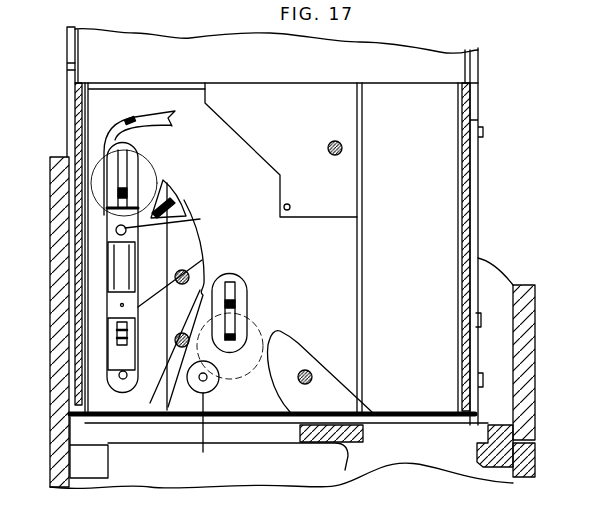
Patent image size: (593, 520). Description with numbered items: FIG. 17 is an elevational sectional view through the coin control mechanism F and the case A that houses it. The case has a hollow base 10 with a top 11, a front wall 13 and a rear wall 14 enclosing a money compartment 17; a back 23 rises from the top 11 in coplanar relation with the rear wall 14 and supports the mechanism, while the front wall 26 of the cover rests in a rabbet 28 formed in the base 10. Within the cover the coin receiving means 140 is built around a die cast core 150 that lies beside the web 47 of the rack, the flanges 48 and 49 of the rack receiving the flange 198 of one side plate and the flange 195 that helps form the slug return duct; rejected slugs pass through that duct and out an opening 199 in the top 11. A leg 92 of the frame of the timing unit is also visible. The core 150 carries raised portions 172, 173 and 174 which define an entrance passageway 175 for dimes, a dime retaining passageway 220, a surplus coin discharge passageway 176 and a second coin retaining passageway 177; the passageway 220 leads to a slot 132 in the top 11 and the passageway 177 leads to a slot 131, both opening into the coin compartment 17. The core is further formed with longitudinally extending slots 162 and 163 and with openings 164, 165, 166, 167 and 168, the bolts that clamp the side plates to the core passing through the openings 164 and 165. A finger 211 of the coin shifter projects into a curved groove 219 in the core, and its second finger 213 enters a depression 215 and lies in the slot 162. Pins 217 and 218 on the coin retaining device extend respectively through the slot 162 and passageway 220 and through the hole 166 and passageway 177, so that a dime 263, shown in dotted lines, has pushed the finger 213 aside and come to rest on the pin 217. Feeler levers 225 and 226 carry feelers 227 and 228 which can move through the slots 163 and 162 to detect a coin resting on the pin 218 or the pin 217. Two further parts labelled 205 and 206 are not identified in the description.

The base 10 is at (48, 491).
The top 11 is at (320, 432).
The front wall 13 is at (525, 463).
The rear wall 14 is at (55, 472).
The money compartment 17 is at (233, 473).
The back 23 is at (58, 379).
The front wall 26 is at (525, 358).
The rabbet 28 is at (515, 442).
The web 47 is at (428, 58).
The flange 48 is at (67, 53).
The flange 49 is at (478, 181).
The leg 92 is at (427, 231).
The slot 131 is at (278, 436).
The slot 132 is at (140, 433).
The coin receiving means 140 is at (215, 83).
The die cast core 150 is at (237, 140).
The slot 162 is at (120, 272).
The slot 163 is at (248, 287).
The opening 164 is at (328, 148).
The opening 165 is at (306, 385).
The hole 166 is at (203, 430).
The opening 167 is at (188, 273).
The opening 168 is at (183, 333).
The raised portion 172 is at (183, 249).
The raised portion 173 is at (328, 103).
The raised portion 174 is at (301, 351).
The entrance passageway 175 is at (125, 102).
The surplus coin discharge passageway 176 is at (342, 302).
The second coin retaining passageway 177 is at (255, 397).
The flange 195 is at (464, 218).
The flange 198 is at (75, 100).
The opening 199 is at (416, 437).
The rod 205 is at (83, 315).
The lever arm 206 is at (148, 402).
The finger 211 is at (143, 112).
The second finger 213 is at (173, 204).
The depression 215 is at (176, 198).
The pin 217 is at (196, 222).
The pin 218 is at (208, 380).
The curved groove 219 is at (170, 123).
The dime retaining passageway 220 is at (100, 233).
The feeler lever 225 is at (230, 283).
The feeler lever 226 is at (107, 258).
The feeler 227 is at (230, 305).
The feeler 228 is at (122, 190).
The dime 263 is at (101, 162).